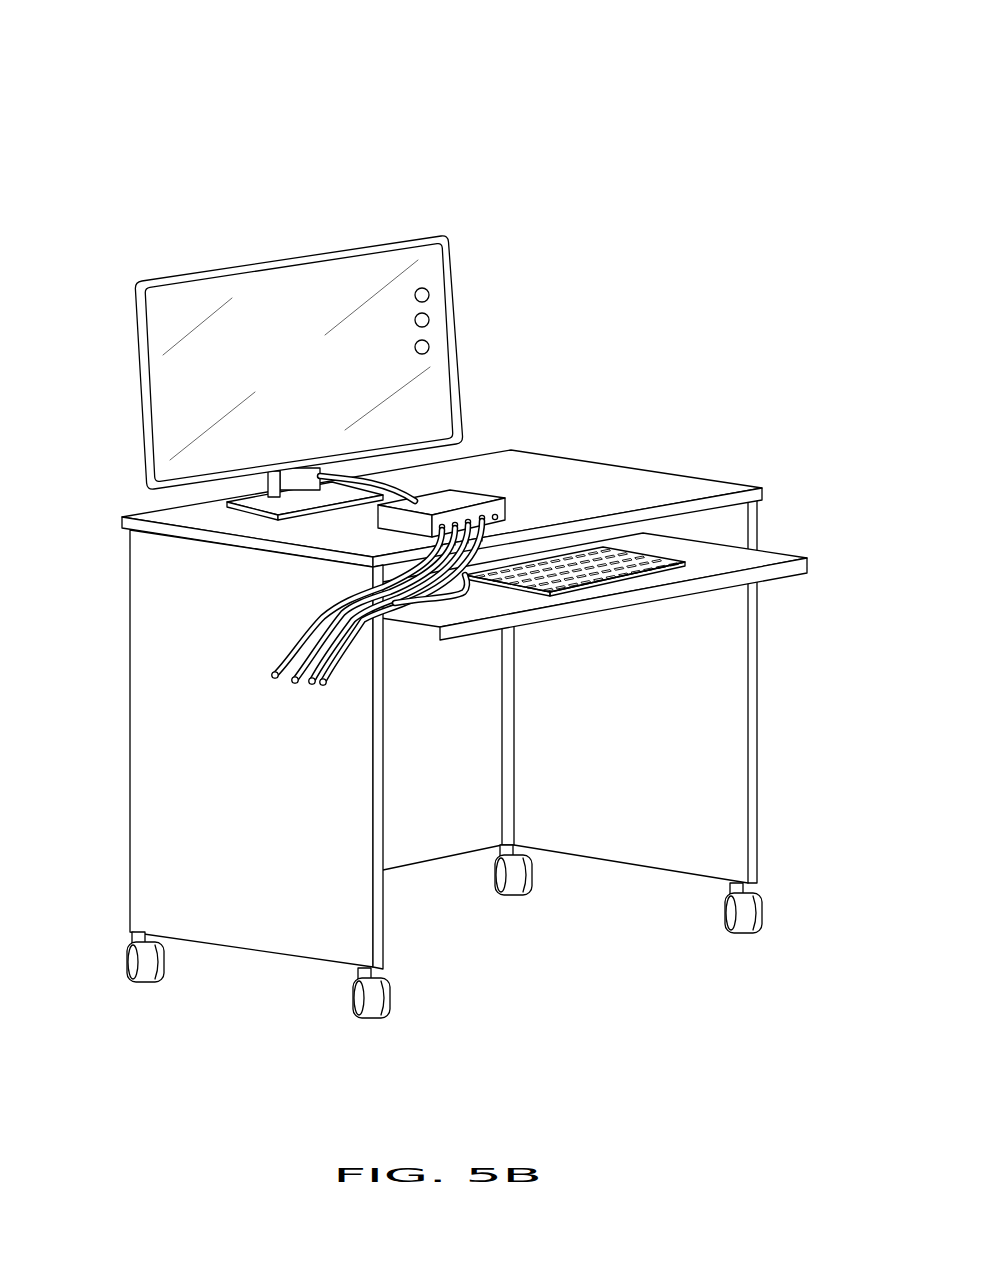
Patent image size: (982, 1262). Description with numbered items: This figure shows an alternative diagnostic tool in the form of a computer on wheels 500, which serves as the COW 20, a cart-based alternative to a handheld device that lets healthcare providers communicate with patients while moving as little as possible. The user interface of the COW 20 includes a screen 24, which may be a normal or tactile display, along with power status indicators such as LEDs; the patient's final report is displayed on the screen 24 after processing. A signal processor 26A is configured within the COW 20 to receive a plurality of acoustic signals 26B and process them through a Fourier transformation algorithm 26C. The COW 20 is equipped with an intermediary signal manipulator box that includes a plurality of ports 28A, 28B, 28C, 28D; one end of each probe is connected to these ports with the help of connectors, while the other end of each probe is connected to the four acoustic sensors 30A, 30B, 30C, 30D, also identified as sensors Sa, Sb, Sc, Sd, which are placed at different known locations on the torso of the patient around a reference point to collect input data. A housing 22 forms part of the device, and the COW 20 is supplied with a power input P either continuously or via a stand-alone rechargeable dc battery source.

The computer on wheels 500 is at (434, 510).
The diagnostic tool (COW) 20 is at (321, 348).
The screen 24 is at (260, 292).
The signal processor 26A is at (430, 290).
The acoustic signals 26B is at (431, 318).
The Fourier transformation algorithm 26C is at (431, 345).
The port 28A is at (226, 502).
The port 28B is at (268, 480).
The port 28C is at (478, 520).
The port 28D is at (483, 515).
The power input P is at (502, 517).
The housing 22 is at (682, 563).
The acoustic sensor 30A is at (272, 673).
The acoustic sensor 30B is at (307, 686).
The acoustic sensor 30C is at (320, 686).
The acoustic sensor 30D is at (327, 685).
The acoustic sensor Sa is at (271, 676).
The acoustic sensor Sb is at (292, 683).
The acoustic sensor Sc is at (312, 685).
The acoustic sensor Sd is at (326, 686).